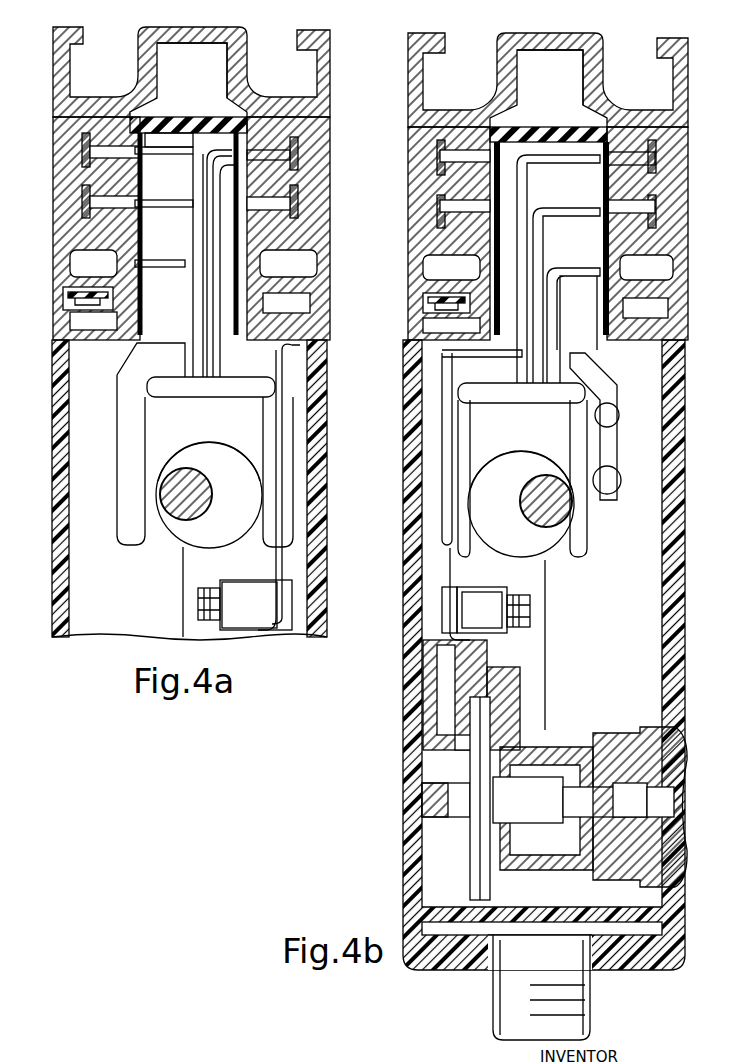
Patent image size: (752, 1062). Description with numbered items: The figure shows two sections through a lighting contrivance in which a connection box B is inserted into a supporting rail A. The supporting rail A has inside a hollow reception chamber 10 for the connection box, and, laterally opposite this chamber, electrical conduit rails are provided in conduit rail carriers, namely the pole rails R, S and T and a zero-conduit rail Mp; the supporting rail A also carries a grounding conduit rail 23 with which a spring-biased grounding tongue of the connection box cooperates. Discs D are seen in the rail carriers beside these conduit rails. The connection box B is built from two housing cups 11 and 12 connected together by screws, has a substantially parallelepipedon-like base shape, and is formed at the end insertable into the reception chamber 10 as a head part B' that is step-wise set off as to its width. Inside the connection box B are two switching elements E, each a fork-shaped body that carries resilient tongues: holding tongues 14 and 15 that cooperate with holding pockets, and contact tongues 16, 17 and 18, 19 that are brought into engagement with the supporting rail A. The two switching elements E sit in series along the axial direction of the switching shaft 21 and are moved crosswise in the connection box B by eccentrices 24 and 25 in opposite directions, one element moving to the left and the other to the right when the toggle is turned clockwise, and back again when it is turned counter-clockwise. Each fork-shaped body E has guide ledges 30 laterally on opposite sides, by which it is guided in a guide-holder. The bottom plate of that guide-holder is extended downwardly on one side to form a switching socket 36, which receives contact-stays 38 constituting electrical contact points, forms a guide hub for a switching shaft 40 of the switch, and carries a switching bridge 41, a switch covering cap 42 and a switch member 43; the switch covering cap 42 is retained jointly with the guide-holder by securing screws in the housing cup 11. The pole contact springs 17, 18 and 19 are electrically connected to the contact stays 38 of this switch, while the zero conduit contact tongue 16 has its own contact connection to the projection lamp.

In FIG. 4A, the connection box reception chamber 10 is at (218, 50).
In FIG. 4B, the connection box reception chamber 10 is at (575, 60).
In FIG. 4A, the housing cup 11 is at (57, 515).
In FIG. 4B, the housing cup 11 is at (410, 573).
In FIG. 4A, the housing cup 12 is at (314, 638).
In FIG. 4B, the housing cup 12 is at (675, 475).
In FIG. 4B, the holding tongue 14 is at (565, 276).
In FIG. 4A, the holding tongue 15 is at (160, 263).
In FIG. 4B, the zero conduit contact tongue 16 is at (560, 220).
In FIG. 4A, the pole contact spring 17 is at (165, 205).
In FIG. 4B, the pole contact spring 18 is at (560, 165).
In FIG. 4A, the pole contact spring 19 is at (173, 150).
In FIG. 4A, the switching shaft 21 is at (178, 495).
In FIG. 4B, the switching shaft 21 is at (538, 478).
In FIG. 4A, the grounding conduit rail 23 is at (75, 340).
In FIG. 4B, the grounding conduit rail 23 is at (425, 305).
In FIG. 4A, the eccentric 24 is at (183, 540).
In FIG. 4B, the eccentric 25 is at (545, 545).
In FIG. 4A, the guide ledge 30 is at (235, 393).
In FIG. 4B, the guide ledge 30 is at (475, 396).
In FIG. 4B, the switching socket 36 is at (460, 713).
In FIG. 4B, the contact stay 38 is at (460, 665).
In FIG. 4B, the switching shaft of switch 40 is at (535, 787).
In FIG. 4B, the switching bridge 41 is at (470, 880).
In FIG. 4B, the switch covering cap 42 is at (545, 672).
In FIG. 4B, the switch member 43 is at (640, 730).
In FIG. 4A, the supporting rail A is at (83, 28).
In FIG. 4B, the supporting rail A is at (433, 33).
In FIG. 4A, the connection box B is at (204, 551).
In FIG. 4B, the connection box B is at (386, 756).
In FIG. 4A, the head part B' is at (188, 106).
In FIG. 4B, the head part B' is at (548, 117).
In FIG. 4A, the pole rail S is at (68, 140).
In FIG. 4B, the pole rail S is at (423, 155).
In FIG. 4A, the disc D is at (68, 185).
In FIG. 4B, the disc D is at (423, 190).
In FIG. 4A, the pole rail T is at (68, 220).
In FIG. 4B, the pole rail T is at (423, 222).
In FIG. 4A, the pole rail R is at (300, 148).
In FIG. 4B, the pole rail R is at (655, 160).
In FIG. 4A, the zero-conduit rail Mp is at (303, 210).
In FIG. 4B, the zero-conduit rail Mp is at (655, 220).
In FIG. 4A, the switching element E is at (300, 346).
In FIG. 4B, the switching element E is at (440, 366).